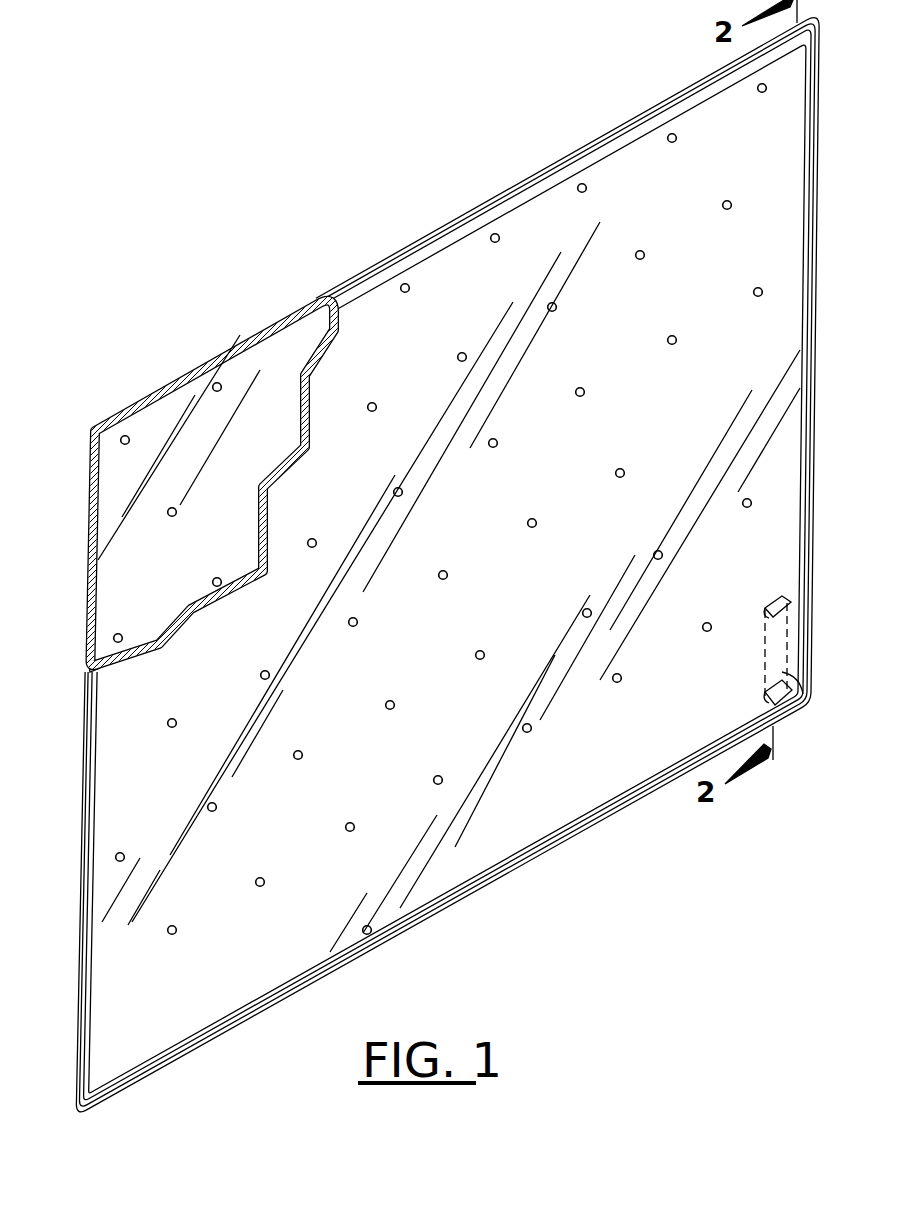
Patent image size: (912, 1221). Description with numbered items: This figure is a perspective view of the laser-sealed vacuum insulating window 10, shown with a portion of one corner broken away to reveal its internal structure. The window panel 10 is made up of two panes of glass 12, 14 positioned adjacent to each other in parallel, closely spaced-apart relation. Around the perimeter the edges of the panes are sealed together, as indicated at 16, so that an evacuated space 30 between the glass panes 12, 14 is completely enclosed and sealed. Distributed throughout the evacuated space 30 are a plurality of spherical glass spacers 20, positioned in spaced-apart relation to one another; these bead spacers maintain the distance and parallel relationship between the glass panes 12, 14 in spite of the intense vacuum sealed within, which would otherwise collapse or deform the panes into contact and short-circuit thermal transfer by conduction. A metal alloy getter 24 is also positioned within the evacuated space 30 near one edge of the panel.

The laser-sealed vacuum insulating window 10 is at (494, 189).
The pane of glass 12 is at (190, 612).
The pane of glass 14 is at (88, 452).
The sealed edges 16 is at (83, 672).
The spherical glass spacers 20 is at (125, 435).
The metal alloy getter 24 is at (793, 690).
The evacuated space 30 is at (93, 665).